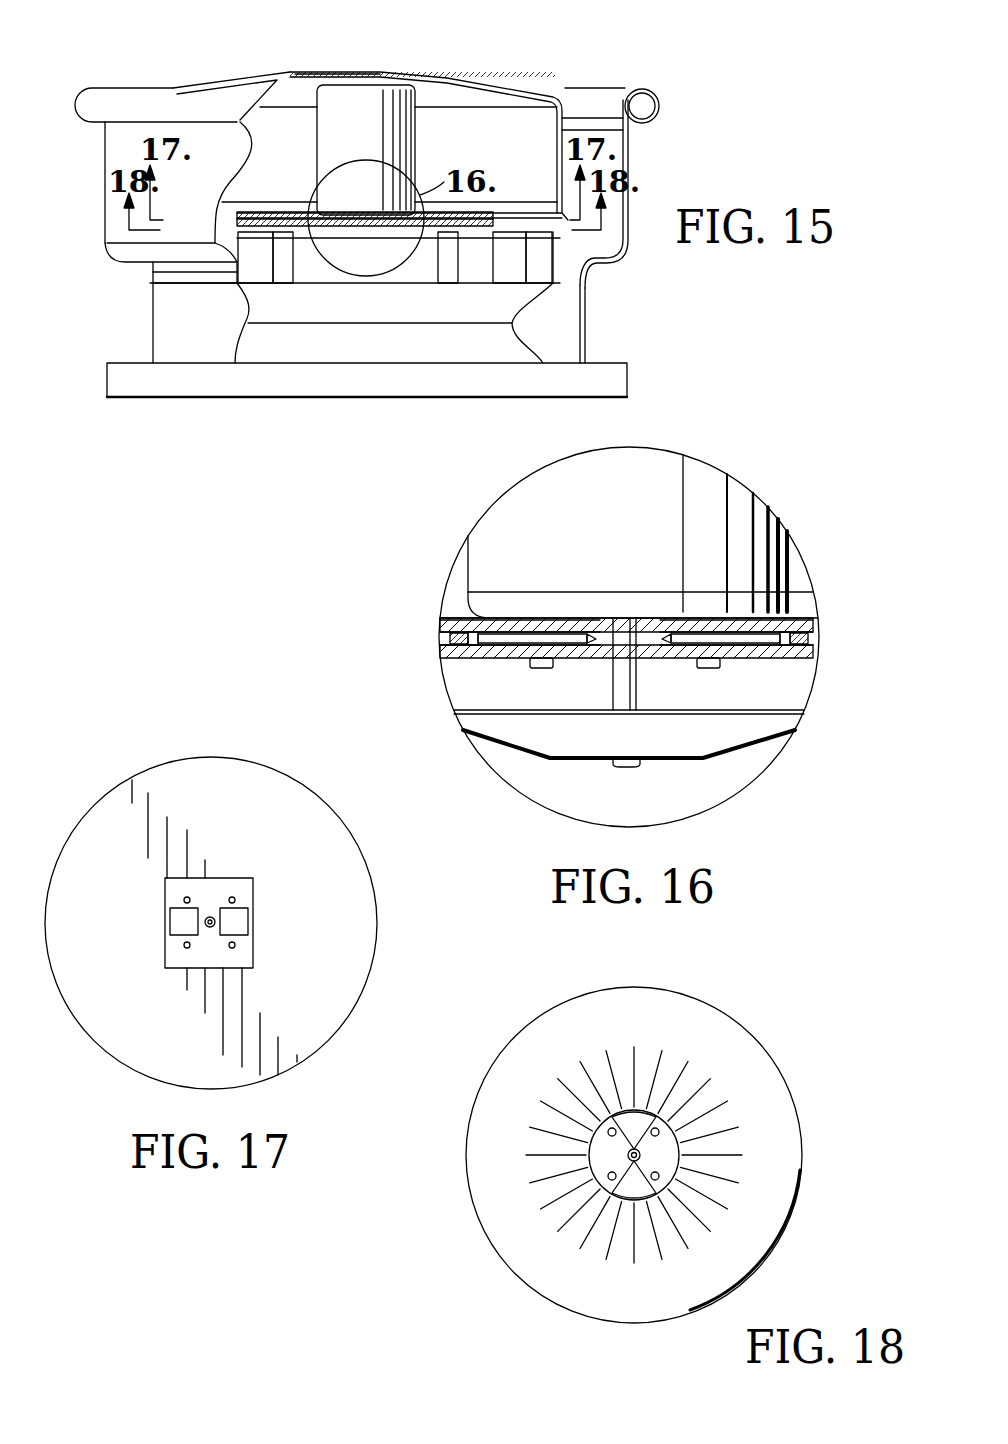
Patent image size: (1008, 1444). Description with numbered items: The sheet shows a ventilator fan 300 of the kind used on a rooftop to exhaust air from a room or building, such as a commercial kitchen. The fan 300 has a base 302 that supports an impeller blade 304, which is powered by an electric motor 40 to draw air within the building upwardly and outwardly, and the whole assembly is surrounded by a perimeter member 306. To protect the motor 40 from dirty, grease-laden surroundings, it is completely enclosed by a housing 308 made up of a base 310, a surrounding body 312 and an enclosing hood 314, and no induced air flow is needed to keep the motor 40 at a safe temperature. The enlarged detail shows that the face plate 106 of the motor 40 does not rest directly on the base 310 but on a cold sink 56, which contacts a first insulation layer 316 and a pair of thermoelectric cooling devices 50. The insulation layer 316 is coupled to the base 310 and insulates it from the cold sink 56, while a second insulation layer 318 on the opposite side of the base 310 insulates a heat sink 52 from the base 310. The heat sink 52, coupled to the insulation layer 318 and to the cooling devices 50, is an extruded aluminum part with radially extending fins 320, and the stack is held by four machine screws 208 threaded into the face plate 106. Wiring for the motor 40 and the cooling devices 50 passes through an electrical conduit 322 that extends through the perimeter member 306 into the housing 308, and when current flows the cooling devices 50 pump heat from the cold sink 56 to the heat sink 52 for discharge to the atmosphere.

In FIG. 15, the electric motor 40 is at (350, 84).
In FIG. 16, the electric motor 40 is at (745, 500).
In FIG. 16, the thermoelectric cooling devices 50 is at (475, 640).
In FIG. 17, the thermoelectric cooling devices 50 is at (170, 922).
In FIG. 16, the heat sink 52 is at (447, 652).
In FIG. 18, the heat sink 52 is at (738, 1176).
In FIG. 16, the cold sink 56 is at (448, 620).
In FIG. 16, the face plate 106 is at (810, 618).
In FIG. 16, the machine screws 208 is at (540, 668).
In FIG. 15, the ventilator fan 300 is at (655, 160).
In FIG. 15, the base 302 is at (232, 380).
In FIG. 15, the impeller blade 304 is at (302, 283).
In FIG. 15, the perimeter member 306 is at (622, 255).
In FIG. 15, the housing 308 is at (527, 82).
In FIG. 15, the base 310 is at (592, 270).
In FIG. 16, the base 310 is at (450, 640).
In FIG. 17, the base 310 is at (315, 785).
In FIG. 18, the base 310 is at (727, 1013).
In FIG. 15, the surrounding body 312 is at (588, 118).
In FIG. 15, the enclosing hood 314 is at (455, 72).
In FIG. 16, the first insulation layer 316 is at (805, 630).
In FIG. 17, the first insulation layer 316 is at (238, 878).
In FIG. 16, the second insulation layer 318 is at (452, 632).
In FIG. 18, the radially extending fins 320 is at (730, 1133).
In FIG. 15, the electrical conduit 322 is at (645, 90).